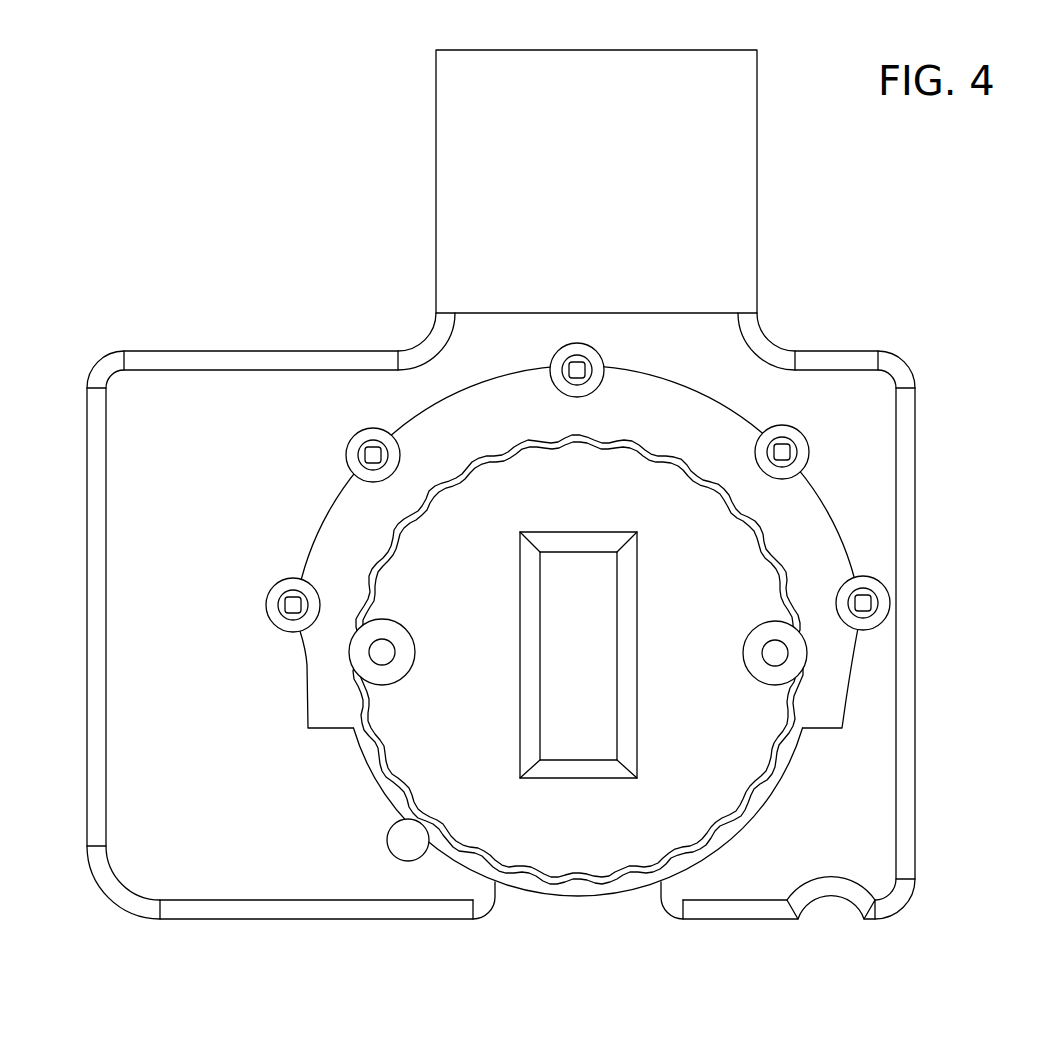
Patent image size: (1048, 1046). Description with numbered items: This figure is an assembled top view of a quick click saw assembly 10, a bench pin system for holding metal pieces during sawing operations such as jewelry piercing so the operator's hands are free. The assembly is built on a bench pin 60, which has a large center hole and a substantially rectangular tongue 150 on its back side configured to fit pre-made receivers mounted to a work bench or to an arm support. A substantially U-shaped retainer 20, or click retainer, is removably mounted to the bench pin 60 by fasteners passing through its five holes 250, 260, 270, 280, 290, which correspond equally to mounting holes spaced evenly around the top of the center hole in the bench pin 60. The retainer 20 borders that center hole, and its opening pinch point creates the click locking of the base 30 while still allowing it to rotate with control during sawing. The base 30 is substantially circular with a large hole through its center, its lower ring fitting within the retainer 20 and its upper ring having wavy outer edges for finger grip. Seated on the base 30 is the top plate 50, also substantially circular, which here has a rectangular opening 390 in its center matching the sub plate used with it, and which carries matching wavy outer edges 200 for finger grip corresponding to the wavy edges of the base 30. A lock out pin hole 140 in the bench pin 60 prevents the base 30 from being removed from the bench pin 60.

The quick click saw assembly 10 is at (297, 275).
The retainer 20 is at (322, 524).
The base 30 is at (578, 898).
The top plate 50 is at (605, 496).
The bench pin 60 is at (858, 348).
The lock out pin hole 140 is at (388, 848).
The tongue 150 is at (605, 194).
The wavy outer edges 200 is at (745, 818).
The hole 250 is at (884, 608).
The hole 260 is at (790, 448).
The hole 270 is at (588, 378).
The hole 280 is at (372, 430).
The hole 290 is at (284, 592).
The rectangular opening 390 is at (620, 730).